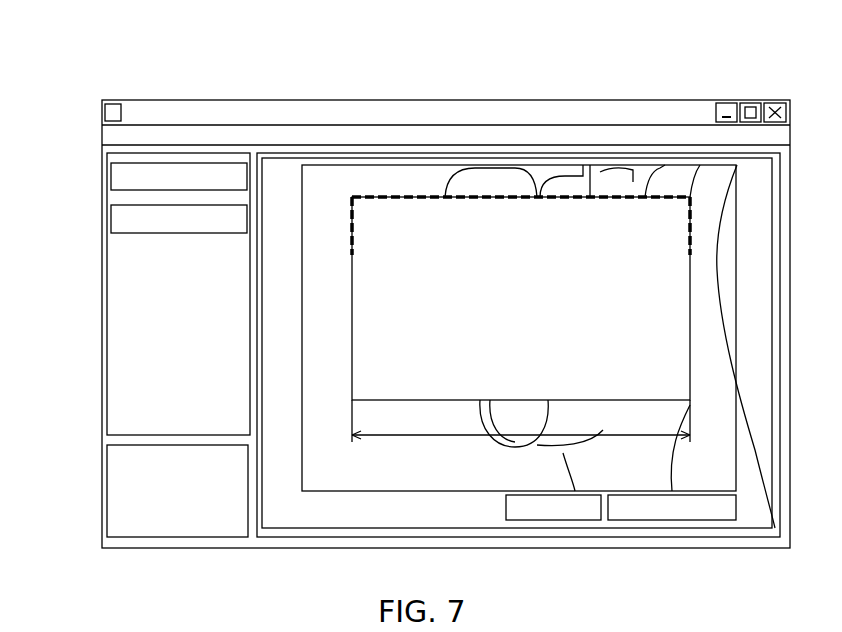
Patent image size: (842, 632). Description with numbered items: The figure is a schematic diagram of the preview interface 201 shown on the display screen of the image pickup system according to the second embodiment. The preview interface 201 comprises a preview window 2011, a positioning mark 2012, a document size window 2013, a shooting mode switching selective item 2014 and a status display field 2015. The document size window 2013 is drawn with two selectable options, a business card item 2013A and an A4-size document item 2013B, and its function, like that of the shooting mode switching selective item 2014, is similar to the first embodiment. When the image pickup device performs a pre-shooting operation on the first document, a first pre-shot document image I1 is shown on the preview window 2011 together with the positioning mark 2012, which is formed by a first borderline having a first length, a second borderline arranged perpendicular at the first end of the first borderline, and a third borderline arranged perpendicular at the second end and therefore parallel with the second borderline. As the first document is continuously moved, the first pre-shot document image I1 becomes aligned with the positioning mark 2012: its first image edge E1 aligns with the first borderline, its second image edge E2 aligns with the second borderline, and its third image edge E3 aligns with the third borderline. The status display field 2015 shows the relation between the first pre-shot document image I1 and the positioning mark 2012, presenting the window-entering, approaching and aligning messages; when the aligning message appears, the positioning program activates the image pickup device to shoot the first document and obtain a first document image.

The preview interface 201 is at (615, 138).
The preview window 2011 is at (360, 460).
The positioning mark 2012 is at (650, 196).
The document size window 2013 is at (130, 344).
The business card option 2013A is at (118, 180).
The A4-size document option 2013B is at (118, 216).
The shooting mode switching selective item 2014 is at (723, 510).
The status display field 2015 is at (208, 512).
The first image edge E1 is at (405, 196).
The second image edge E2 is at (350, 338).
The third image edge E3 is at (771, 530).
The first pre-shot document image I1 is at (413, 383).